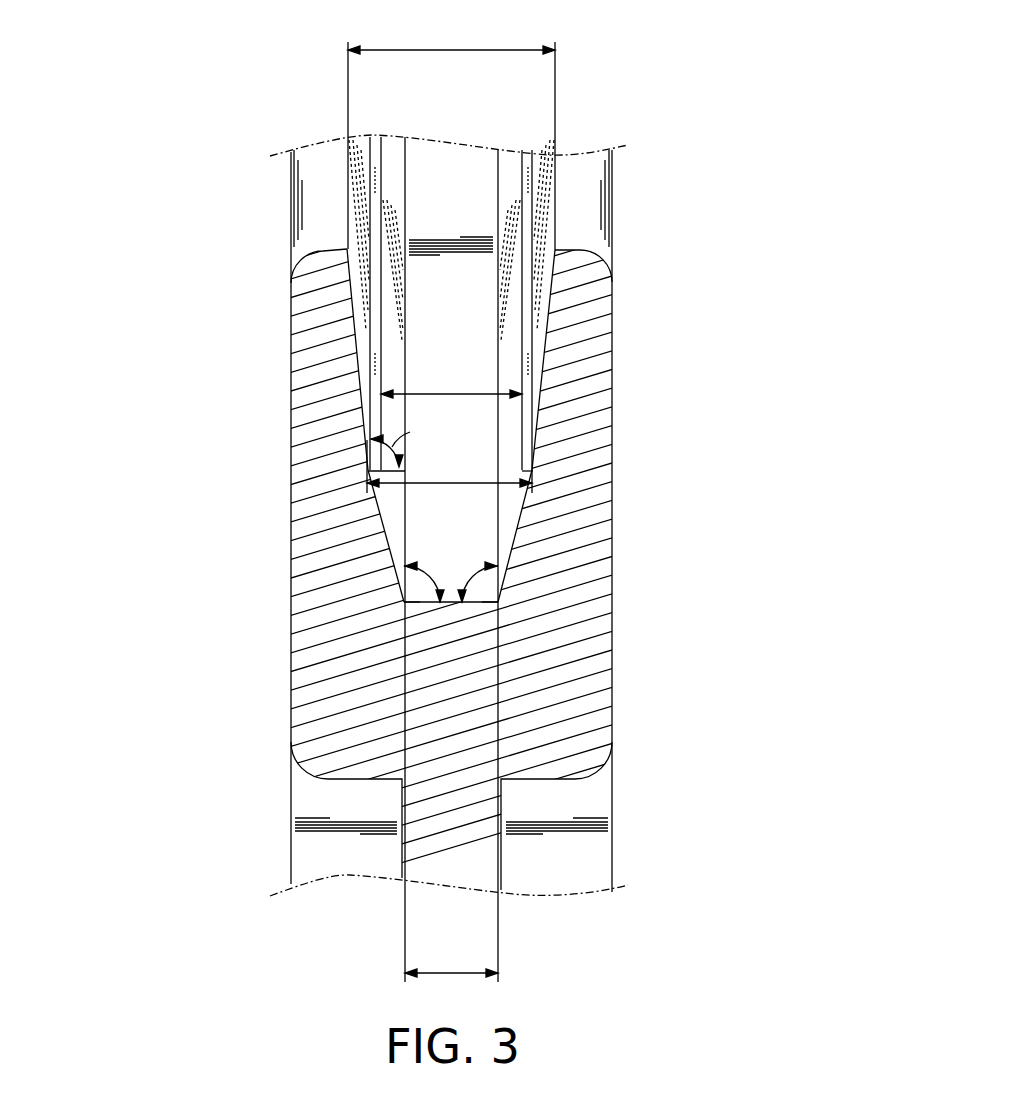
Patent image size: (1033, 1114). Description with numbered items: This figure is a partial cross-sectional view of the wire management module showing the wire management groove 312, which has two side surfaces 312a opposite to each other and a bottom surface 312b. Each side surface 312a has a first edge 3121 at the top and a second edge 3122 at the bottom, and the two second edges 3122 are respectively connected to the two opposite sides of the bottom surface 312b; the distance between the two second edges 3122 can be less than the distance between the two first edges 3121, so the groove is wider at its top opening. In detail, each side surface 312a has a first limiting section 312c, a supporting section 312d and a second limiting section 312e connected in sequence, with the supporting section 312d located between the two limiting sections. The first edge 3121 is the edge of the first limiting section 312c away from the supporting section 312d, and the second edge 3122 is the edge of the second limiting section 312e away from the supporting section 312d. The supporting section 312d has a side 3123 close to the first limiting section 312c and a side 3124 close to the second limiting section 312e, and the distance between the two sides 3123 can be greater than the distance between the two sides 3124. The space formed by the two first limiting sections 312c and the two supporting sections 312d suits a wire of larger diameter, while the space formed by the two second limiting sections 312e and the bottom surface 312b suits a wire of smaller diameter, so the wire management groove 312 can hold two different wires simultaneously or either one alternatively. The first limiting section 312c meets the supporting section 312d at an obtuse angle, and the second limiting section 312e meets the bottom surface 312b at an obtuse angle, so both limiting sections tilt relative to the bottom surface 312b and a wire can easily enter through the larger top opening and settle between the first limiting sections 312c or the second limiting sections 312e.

The wire management groove 312 is at (137, 89).
The first edge 3121 is at (354, 242).
The side surface 312a is at (450, 369).
The bottom surface 312b is at (449, 600).
The first limiting section 312c is at (355, 335).
The supporting section 312d is at (358, 426).
The second limiting section 312e is at (385, 505).
The second edge 3122 is at (403, 603).
The side of the supporting section close to the first limiting section 3123 is at (380, 476).
The side of the supporting section close to the second limiting section 3124 is at (365, 474).